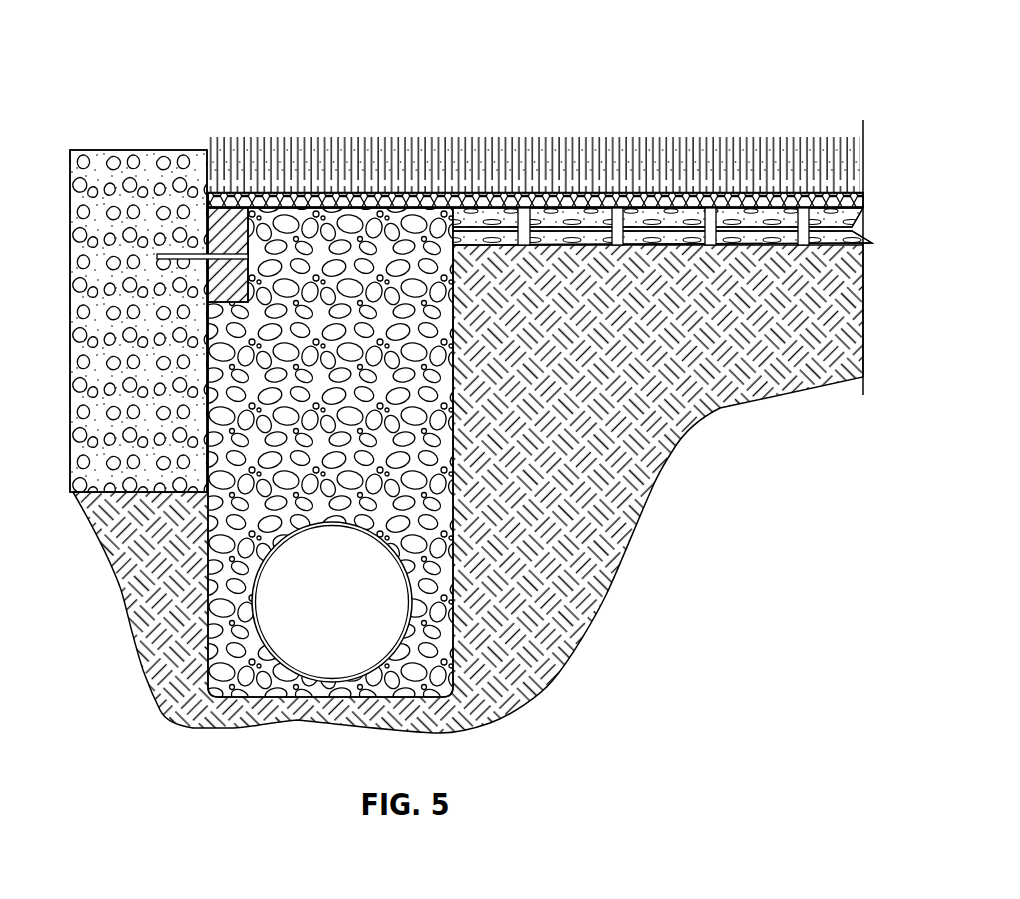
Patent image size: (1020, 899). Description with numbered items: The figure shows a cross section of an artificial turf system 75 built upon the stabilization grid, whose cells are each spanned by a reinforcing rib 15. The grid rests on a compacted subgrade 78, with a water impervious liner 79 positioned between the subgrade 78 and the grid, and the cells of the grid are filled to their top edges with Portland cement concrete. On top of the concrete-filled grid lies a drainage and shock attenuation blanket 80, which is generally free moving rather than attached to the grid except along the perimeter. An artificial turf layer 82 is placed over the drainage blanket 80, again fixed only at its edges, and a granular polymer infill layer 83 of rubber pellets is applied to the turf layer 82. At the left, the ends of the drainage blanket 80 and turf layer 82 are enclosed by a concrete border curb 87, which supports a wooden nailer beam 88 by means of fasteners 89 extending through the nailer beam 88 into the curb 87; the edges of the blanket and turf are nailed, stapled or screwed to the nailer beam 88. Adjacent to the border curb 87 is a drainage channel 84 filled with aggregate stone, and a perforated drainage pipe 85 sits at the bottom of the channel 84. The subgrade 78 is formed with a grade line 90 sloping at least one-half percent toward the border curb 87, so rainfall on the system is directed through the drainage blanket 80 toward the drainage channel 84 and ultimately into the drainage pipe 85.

The reinforcing rib 15 is at (865, 260).
The artificial turf system 75 is at (535, 114).
The compacted subgrade 78 is at (780, 390).
The water impervious liner 79 is at (772, 247).
The drainage and shock attenuation blanket 80 is at (862, 200).
The artificial turf layer 82 is at (715, 135).
The granular polymer infill layer 83 is at (265, 168).
The drainage channel 84 is at (447, 655).
The perforated drainage pipe 85 is at (295, 678).
The concrete border curb 87 is at (113, 170).
The wooden nailer beam 88 is at (227, 280).
The fasteners 89 is at (160, 250).
The grade line 90 is at (479, 123).